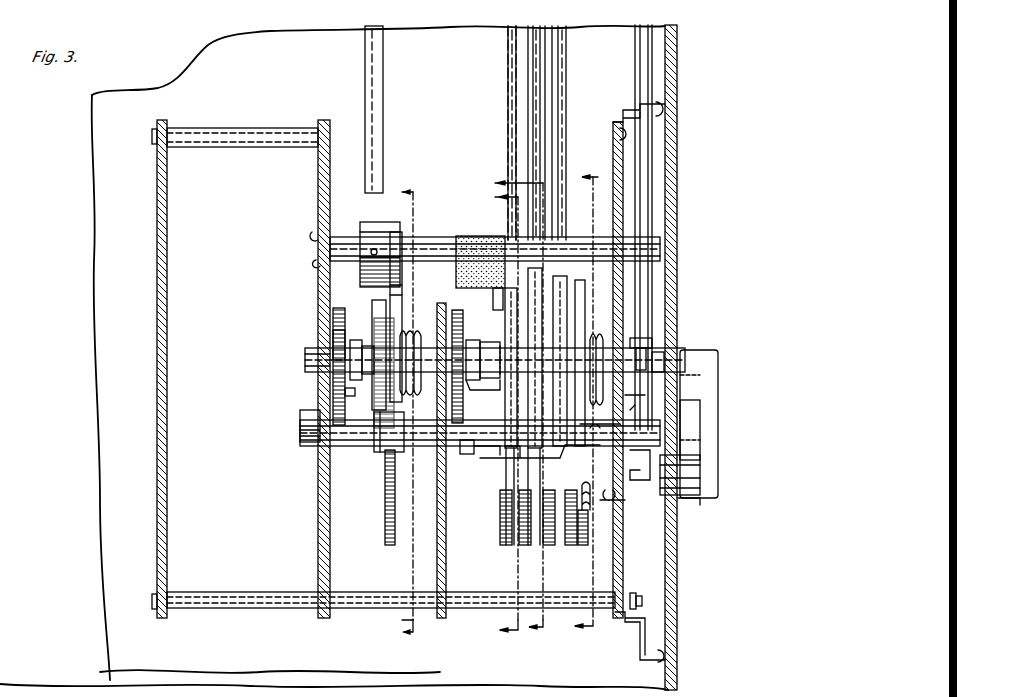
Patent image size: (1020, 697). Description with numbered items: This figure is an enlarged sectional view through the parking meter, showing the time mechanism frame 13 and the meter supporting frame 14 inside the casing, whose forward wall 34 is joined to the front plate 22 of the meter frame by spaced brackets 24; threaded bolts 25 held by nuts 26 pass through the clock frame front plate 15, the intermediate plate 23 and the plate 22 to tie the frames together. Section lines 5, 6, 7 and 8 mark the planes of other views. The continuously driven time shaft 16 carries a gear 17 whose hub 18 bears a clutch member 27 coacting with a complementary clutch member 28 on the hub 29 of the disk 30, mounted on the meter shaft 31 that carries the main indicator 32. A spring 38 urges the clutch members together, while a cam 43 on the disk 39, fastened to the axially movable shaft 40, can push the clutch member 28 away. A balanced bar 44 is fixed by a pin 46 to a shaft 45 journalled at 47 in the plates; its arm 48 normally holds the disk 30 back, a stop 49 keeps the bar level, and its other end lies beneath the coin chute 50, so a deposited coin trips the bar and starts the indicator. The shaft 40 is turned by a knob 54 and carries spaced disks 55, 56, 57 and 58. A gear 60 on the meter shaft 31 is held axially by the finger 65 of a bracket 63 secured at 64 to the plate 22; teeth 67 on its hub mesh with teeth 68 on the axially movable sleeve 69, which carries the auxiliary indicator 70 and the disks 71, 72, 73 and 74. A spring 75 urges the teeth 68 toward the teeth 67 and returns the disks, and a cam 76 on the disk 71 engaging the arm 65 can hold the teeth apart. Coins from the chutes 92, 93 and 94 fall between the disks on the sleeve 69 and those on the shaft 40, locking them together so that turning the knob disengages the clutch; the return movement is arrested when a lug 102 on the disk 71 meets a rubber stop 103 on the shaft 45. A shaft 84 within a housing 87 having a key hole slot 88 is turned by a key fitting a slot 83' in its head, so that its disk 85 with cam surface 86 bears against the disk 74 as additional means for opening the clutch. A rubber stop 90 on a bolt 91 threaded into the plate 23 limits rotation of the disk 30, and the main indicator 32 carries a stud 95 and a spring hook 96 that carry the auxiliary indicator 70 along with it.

The section line 5 is at (392, 412).
The section line 6 is at (499, 413).
The section line 7 is at (511, 409).
The section line 8 is at (578, 402).
The time mechanism frame 13 is at (160, 530).
The meter supporting frame 14 is at (385, 590).
The front plate of the clock frame 15 is at (320, 525).
The time shaft 16 is at (310, 364).
The gear 17 is at (334, 318).
The hub 18 is at (334, 337).
The front plate of the meter frame 22 is at (623, 508).
The plate 23 is at (438, 520).
The brackets 24 is at (662, 112).
The threaded bolts 25 is at (208, 609).
The nuts 26 is at (153, 597).
The clutch member 27 is at (356, 338).
The complementary clutch member 28 is at (366, 346).
The hub 29 is at (416, 338).
The disk 30 is at (403, 298).
The meter shaft 31 is at (666, 358).
The main indicator 32 is at (652, 282).
The forward wall of the casing 34 is at (700, 551).
The combined compression and torsional spring 38 is at (420, 400).
The disk 39 is at (640, 408).
The axially movable shaft 40 is at (310, 440).
The cam 43 is at (345, 392).
The balanced bar 44 is at (372, 230).
The shaft 45 is at (428, 240).
The pin 46 is at (377, 250).
The journals 47 is at (314, 236).
The arm 48 is at (404, 287).
The stop 49 is at (353, 238).
The coin chute 50 is at (383, 90).
The knob 54 is at (720, 370).
The disk 55 is at (500, 540).
The disk 56 is at (519, 548).
The disk 57 is at (548, 548).
The disk 58 is at (572, 550).
The gear 60 is at (463, 316).
The bracket 63 is at (505, 462).
The bracket securing point 64 is at (635, 500).
The finger 65 is at (467, 452).
The teeth 67 is at (476, 340).
The complementary teeth 68 is at (484, 390).
The sleeve 69 is at (488, 342).
The auxiliary indicator 70 is at (640, 262).
The disk 71 is at (508, 458).
The disk 72 is at (530, 462).
The disk 73 is at (555, 290).
The disk 74 is at (582, 285).
The combined torsional and compression spring 75 is at (595, 335).
The cam 76 is at (496, 458).
The slot 83' is at (702, 472).
The shaft 84 is at (640, 465).
The disk 85 is at (589, 530).
The cam surface 86 is at (605, 430).
The housing 87 is at (698, 505).
The key hole slot 88 is at (592, 508).
The rubber stop 90 is at (405, 450).
The bolt 91 is at (380, 456).
The chute 92 is at (510, 55).
The chute 93 is at (536, 76).
The chute 94 is at (555, 93).
The stud 95 is at (652, 338).
The spring hook member 96 is at (648, 350).
The lug 102 is at (495, 288).
The rubber stop 103 is at (478, 236).